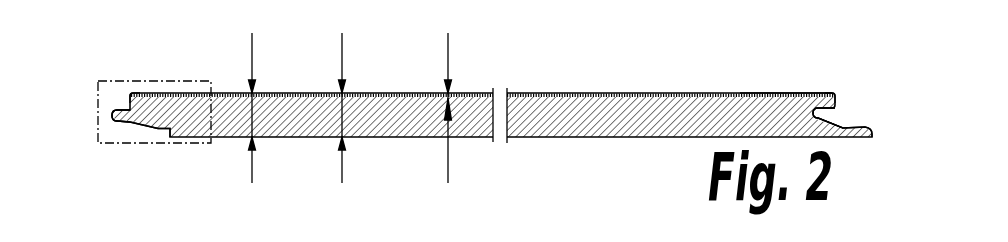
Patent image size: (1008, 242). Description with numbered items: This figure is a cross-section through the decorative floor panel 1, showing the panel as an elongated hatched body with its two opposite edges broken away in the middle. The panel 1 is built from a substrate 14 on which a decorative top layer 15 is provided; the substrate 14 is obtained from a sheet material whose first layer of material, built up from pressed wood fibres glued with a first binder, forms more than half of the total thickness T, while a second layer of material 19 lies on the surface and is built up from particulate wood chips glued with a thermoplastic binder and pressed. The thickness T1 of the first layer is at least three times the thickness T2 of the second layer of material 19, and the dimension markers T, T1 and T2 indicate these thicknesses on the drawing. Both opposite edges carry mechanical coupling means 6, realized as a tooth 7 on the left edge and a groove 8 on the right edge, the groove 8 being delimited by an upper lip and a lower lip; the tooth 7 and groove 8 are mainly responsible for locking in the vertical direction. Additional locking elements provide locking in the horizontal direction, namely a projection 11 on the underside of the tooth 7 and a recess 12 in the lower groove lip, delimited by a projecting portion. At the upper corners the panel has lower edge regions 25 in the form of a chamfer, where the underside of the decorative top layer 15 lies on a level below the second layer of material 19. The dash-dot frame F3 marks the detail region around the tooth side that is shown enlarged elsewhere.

The decorative panel 1 is at (641, 87).
The mechanical coupling means 6 is at (97, 103).
The tooth 7 is at (132, 128).
The groove 8 is at (825, 117).
The projection 11 is at (147, 129).
The recess 12 is at (866, 125).
The substrate 14 is at (582, 120).
The decorative top layer 15 is at (543, 93).
The second layer of material 19 is at (773, 93).
The lower edge region 25 is at (130, 94).
The detail area F3 is at (158, 81).
The thickness of the sheet material T is at (265, 106).
The thickness of the first layer of material T1 is at (362, 106).
The thickness of the second layer of material T2 is at (469, 106).